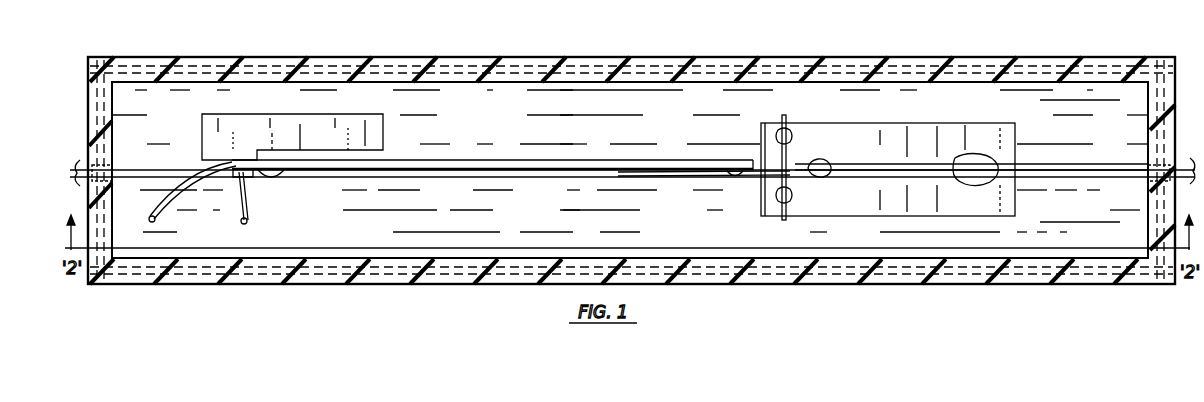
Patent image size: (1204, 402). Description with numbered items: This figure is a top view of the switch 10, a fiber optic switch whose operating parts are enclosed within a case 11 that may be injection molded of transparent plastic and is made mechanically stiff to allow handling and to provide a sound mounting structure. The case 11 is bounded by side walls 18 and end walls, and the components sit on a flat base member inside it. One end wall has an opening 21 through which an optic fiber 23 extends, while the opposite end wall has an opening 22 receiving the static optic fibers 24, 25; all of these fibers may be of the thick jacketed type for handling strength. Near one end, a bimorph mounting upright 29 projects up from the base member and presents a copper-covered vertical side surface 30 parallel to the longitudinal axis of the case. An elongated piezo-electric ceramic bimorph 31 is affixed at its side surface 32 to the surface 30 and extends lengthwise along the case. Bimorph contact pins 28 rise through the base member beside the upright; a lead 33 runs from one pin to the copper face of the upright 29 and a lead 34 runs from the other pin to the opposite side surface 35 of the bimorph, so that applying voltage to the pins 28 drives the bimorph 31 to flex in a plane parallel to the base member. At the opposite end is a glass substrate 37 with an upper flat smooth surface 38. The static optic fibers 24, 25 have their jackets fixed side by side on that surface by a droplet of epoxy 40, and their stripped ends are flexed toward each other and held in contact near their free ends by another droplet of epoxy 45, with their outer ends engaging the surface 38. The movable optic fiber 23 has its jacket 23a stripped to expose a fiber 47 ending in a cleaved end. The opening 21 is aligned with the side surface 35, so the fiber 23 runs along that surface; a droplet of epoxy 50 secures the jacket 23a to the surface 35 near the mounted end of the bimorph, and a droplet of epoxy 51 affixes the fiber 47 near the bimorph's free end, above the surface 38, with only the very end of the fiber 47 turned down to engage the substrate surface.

The switch 10 is at (615, 36).
The case 11 is at (309, 56).
The side walls 18 is at (817, 62).
The opening 21 is at (88, 165).
The opening 22 is at (1183, 138).
The optic fiber 23 is at (142, 173).
The jacket 23a is at (533, 177).
The optic fiber 24 is at (1120, 167).
The optic fiber 25 is at (1120, 180).
The bimorph contact pins 28 is at (175, 200).
The bimorph mounting upright 29 is at (352, 123).
The vertical side surface 30 is at (250, 160).
The bimorph 31 is at (453, 160).
The side surface 32 is at (430, 160).
The lead 33 is at (177, 200).
The lead 34 is at (253, 203).
The side surface 35 is at (493, 168).
The glass substrate 37 is at (875, 120).
The upper flat smooth surface 38 is at (828, 175).
The droplet of epoxy 40 is at (975, 163).
The droplet of epoxy 45 is at (817, 198).
The exposed fiber 47 is at (673, 175).
The droplet of epoxy 50 is at (258, 170).
The droplet of epoxy 51 is at (740, 178).